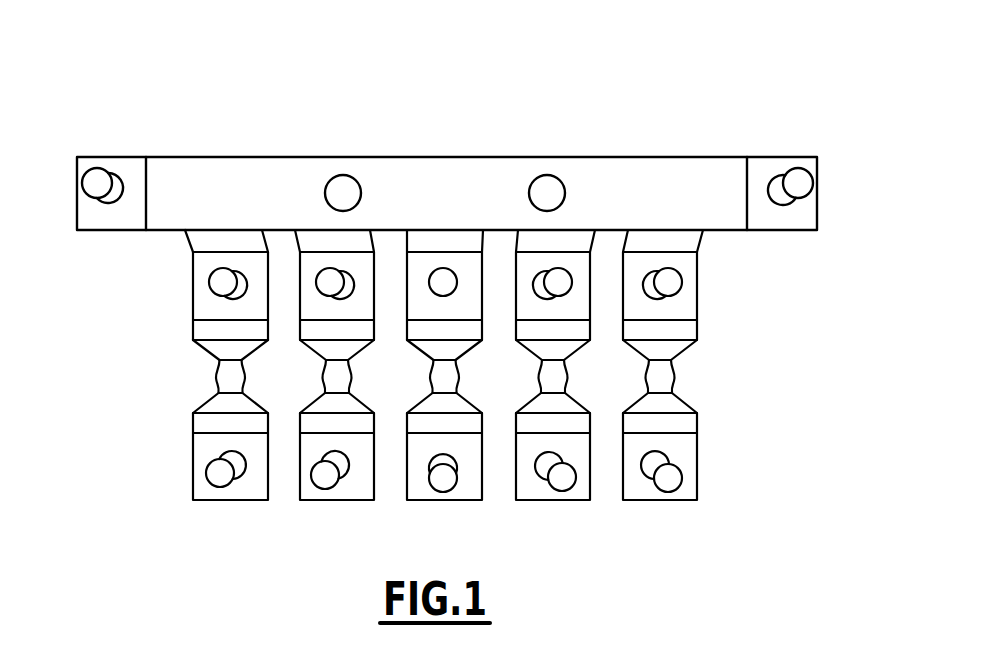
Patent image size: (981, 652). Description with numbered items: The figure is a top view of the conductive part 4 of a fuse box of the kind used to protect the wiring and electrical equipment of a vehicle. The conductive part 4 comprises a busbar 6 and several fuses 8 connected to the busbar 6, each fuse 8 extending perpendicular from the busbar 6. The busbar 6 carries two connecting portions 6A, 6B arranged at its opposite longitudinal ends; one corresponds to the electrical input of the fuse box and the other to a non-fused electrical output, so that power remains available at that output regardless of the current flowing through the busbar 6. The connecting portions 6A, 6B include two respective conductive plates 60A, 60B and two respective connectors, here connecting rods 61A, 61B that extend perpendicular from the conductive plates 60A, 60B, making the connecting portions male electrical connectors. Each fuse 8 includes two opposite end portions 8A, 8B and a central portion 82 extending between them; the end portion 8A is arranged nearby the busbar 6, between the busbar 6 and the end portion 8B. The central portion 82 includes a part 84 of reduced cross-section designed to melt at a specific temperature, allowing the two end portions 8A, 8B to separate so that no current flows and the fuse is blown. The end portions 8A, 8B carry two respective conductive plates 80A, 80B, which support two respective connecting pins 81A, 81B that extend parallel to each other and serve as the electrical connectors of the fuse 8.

The conductive part 4 is at (536, 92).
The busbar 6 is at (628, 175).
The connecting portion 6A is at (178, 53).
The conductive plate 60A is at (130, 170).
The connecting rod 61A is at (98, 180).
The connecting portion 6B is at (845, 20).
The conductive plate 60B is at (765, 168).
The connecting rod 61B is at (797, 185).
The fuse 8 is at (272, 517).
The end portion 8A is at (85, 255).
The conductive plate 80A is at (205, 308).
The connecting pin 81A is at (220, 282).
The central portion 82 is at (175, 335).
The part of reduced cross-section 84 is at (236, 378).
The end portion 8B is at (90, 453).
The conductive plate 80B is at (200, 447).
The connecting pin 81B is at (218, 477).